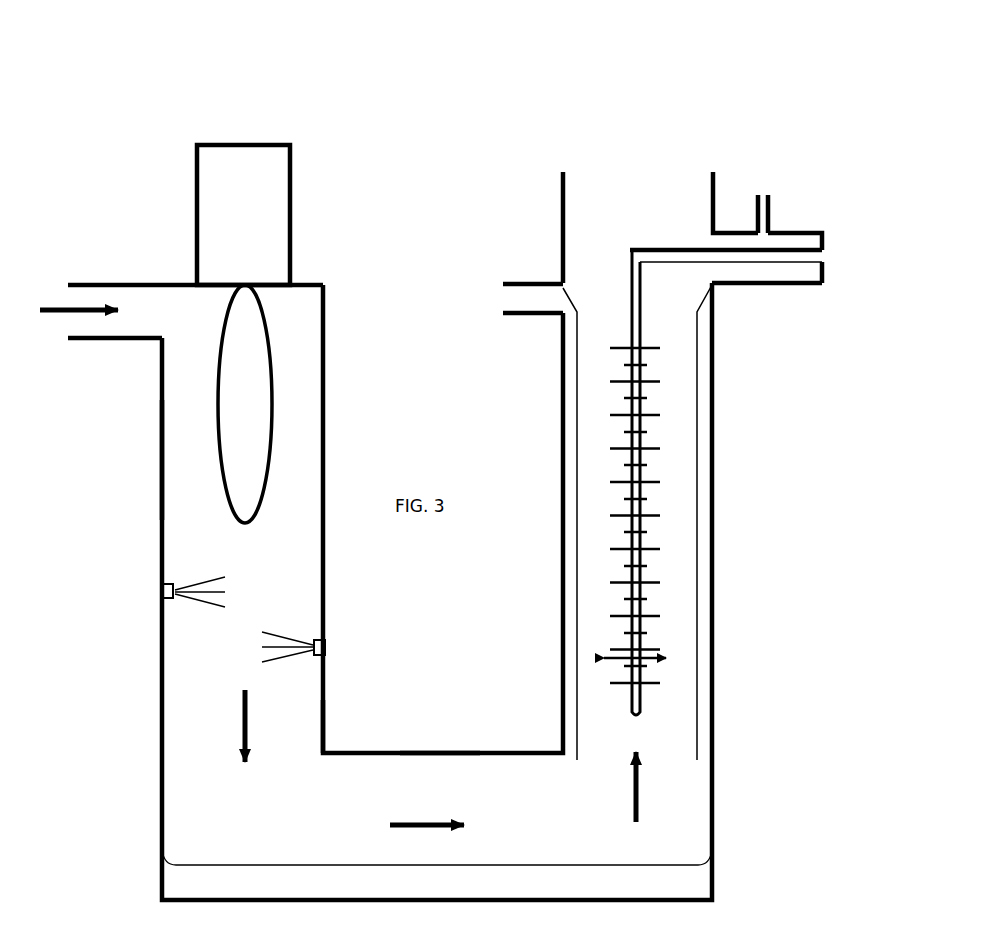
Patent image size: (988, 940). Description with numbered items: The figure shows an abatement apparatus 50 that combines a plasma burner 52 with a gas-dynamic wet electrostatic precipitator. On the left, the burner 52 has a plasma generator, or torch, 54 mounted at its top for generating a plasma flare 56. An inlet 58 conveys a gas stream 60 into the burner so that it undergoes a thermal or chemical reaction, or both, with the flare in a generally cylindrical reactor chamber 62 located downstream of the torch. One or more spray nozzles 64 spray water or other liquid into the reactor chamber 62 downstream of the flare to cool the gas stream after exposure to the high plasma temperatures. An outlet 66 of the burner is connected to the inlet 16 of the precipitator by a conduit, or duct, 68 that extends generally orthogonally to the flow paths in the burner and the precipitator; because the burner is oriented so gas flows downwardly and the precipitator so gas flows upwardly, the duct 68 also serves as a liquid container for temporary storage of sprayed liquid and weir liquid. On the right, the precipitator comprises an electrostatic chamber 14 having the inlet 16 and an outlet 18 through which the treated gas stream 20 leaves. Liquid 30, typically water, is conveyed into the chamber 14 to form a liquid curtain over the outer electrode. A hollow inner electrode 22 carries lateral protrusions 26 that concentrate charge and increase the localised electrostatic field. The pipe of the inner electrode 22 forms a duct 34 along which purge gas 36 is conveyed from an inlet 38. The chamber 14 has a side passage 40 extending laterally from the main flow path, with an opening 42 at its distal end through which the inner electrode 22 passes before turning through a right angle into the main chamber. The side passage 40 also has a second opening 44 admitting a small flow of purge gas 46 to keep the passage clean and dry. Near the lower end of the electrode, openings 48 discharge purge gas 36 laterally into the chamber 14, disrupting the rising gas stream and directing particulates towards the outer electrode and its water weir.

The abatement apparatus 50 is at (401, 152).
The electrostatic chamber 14 is at (680, 431).
The inlet 16 is at (714, 740).
The outlet 18 is at (560, 178).
The treated gas stream 20 is at (635, 225).
The inner electrode 22 is at (640, 544).
The protrusions 26 is at (645, 578).
The liquid 30 is at (556, 298).
The duct 34 is at (642, 322).
The purge gas 36 is at (862, 258).
The inlet 38 is at (834, 268).
The side passage 40 is at (792, 286).
The opening 42 is at (823, 250).
The second opening 44 is at (776, 216).
The purge gas 46 is at (761, 188).
The openings 48 is at (645, 668).
The plasma burner 52 is at (122, 436).
The plasma generator 54 is at (243, 215).
The plasma flare 56 is at (252, 395).
The inlet 58 is at (95, 340).
The gas stream 60 is at (64, 310).
The reactor chamber 62 is at (178, 458).
The spray nozzles 64 is at (162, 590).
The outlet 66 is at (328, 738).
The duct 68 is at (437, 750).